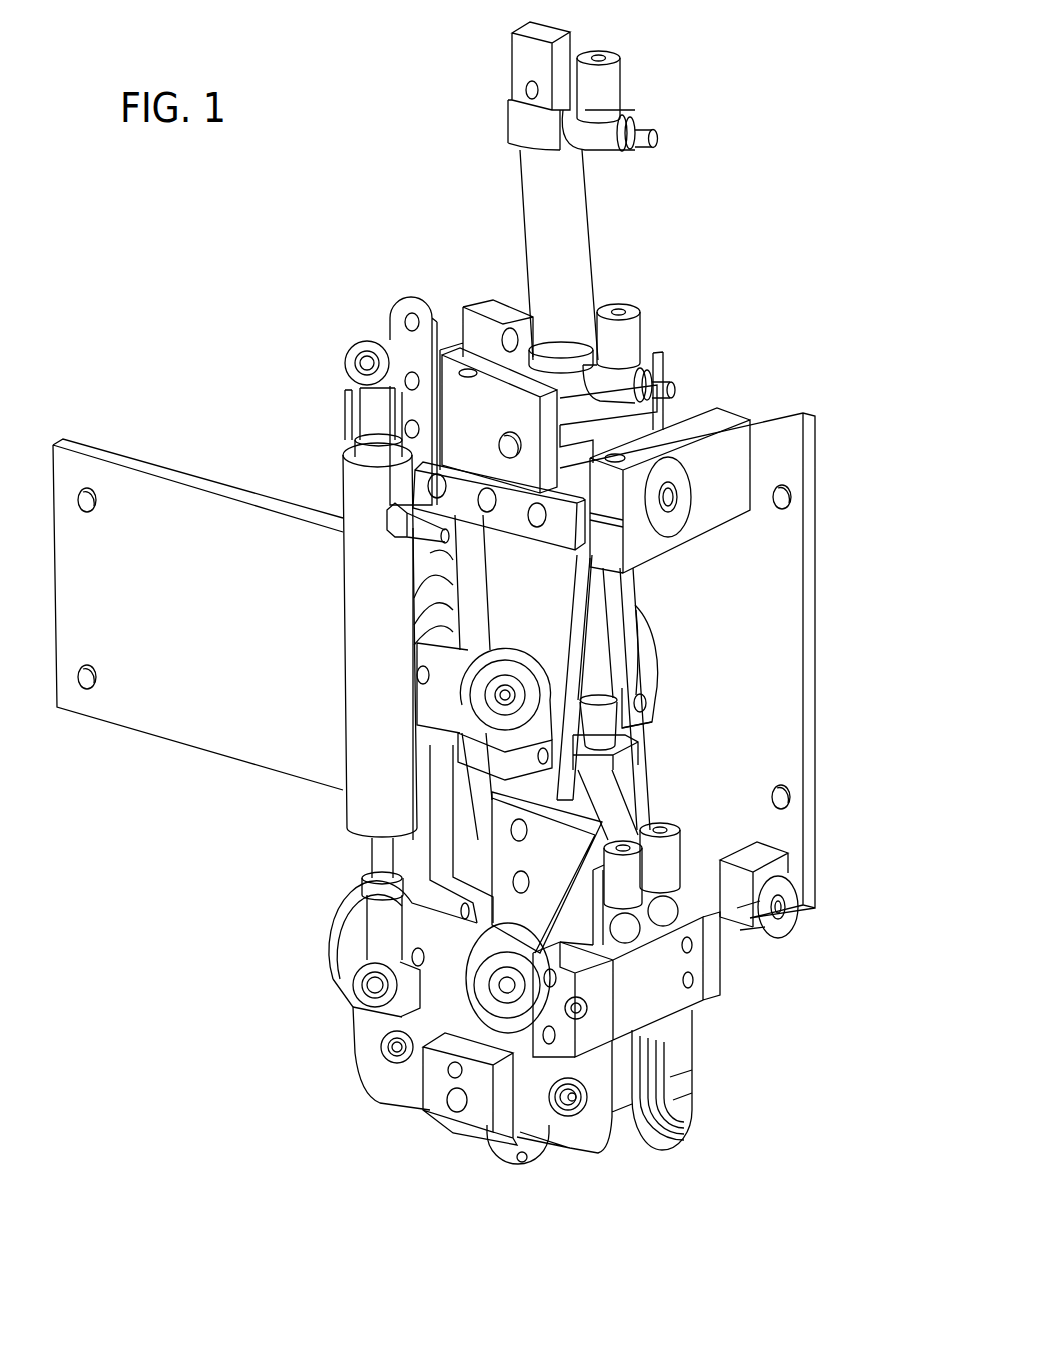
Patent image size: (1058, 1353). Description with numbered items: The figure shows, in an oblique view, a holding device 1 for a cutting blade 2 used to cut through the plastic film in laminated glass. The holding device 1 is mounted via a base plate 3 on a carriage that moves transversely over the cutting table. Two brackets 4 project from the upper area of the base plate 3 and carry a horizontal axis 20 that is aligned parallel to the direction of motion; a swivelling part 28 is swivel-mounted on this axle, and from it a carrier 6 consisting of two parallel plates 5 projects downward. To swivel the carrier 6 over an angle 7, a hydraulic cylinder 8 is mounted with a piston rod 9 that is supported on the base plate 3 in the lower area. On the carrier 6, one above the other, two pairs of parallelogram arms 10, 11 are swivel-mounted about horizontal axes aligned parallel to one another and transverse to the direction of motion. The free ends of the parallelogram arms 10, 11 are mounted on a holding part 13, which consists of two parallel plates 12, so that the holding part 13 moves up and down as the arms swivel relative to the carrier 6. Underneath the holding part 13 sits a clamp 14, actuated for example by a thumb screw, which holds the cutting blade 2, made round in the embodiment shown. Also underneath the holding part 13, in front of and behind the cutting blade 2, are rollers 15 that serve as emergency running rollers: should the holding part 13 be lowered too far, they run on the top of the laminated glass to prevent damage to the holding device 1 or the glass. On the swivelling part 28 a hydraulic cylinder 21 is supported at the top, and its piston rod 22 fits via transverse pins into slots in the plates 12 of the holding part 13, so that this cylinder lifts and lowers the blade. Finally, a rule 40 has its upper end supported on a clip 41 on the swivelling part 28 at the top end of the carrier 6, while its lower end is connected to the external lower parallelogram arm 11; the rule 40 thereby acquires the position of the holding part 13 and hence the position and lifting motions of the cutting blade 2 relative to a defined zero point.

The holding device 1 is at (314, 344).
The cutting blade 2 is at (512, 1160).
The base plate 3 is at (770, 460).
The brackets 4 is at (450, 345).
The plates 5 is at (575, 625).
The carrier 6 is at (676, 672).
The angle 7 is at (566, 831).
The hydraulic cylinder 8 is at (662, 990).
The piston rod 9 is at (737, 927).
The parallelogram arms 10 is at (445, 693).
The parallelogram arms 11 is at (447, 975).
The plates 12 is at (440, 902).
The holding part 13 is at (397, 872).
The clamp 14 is at (440, 1080).
The rollers 15 is at (637, 1100).
The axis 20 is at (673, 503).
The hydraulic cylinder 21 is at (562, 265).
The piston rod 22 is at (598, 687).
The swivelling part 28 is at (493, 343).
The rule 40 is at (365, 506).
The clip 41 is at (392, 310).